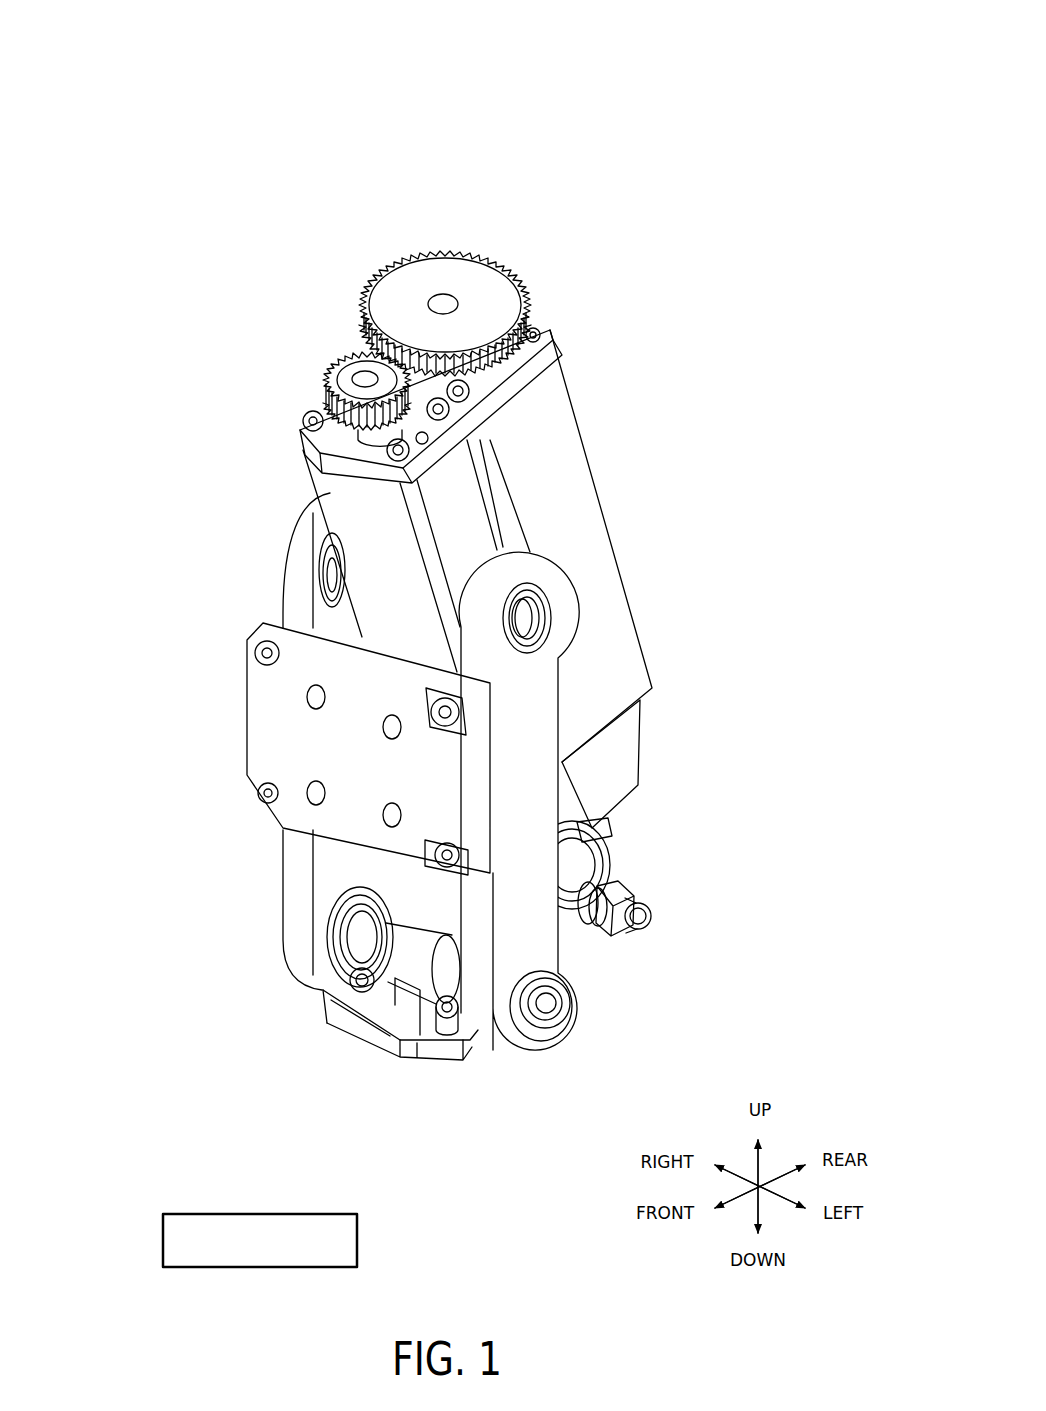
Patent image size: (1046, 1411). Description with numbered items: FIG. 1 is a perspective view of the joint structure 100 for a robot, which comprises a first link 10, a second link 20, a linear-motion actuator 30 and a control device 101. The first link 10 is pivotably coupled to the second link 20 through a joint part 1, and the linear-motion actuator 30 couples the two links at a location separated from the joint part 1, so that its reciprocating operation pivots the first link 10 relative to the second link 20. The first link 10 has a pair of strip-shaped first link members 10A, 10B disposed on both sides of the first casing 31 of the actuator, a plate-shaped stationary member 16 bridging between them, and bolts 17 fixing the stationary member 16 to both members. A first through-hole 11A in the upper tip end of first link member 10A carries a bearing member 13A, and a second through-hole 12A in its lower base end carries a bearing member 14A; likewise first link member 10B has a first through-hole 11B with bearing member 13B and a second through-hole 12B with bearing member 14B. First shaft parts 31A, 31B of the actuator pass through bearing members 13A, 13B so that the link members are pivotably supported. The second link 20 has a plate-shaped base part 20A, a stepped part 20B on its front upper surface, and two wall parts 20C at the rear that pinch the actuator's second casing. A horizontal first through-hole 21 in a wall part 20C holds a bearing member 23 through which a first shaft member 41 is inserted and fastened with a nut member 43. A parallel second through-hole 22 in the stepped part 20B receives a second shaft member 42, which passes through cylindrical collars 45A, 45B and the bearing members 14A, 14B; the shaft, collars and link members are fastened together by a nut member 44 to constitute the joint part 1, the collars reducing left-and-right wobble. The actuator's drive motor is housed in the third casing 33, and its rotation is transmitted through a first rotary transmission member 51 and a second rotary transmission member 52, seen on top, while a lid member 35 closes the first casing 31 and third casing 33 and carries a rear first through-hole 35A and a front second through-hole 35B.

The joint structure 100 is at (439, 29).
The joint part 1 is at (323, 992).
The first link 10 is at (292, 528).
The first link member 10A is at (300, 873).
The first link member 10B is at (528, 771).
The first through-hole 11A is at (300, 556).
The first through-hole 11B is at (538, 650).
The second through-hole 12A is at (325, 982).
The second through-hole 12B is at (573, 957).
The bearing member 13A is at (310, 598).
The bearing member 13B is at (550, 599).
The bearing member 14A is at (330, 908).
The bearing member 14B is at (553, 1038).
The stationary member 16 is at (295, 727).
The bolts 17 is at (256, 650).
The second link 20 is at (449, 1067).
The base part 20A is at (392, 1052).
The stepped part 20B is at (400, 1030).
The wall parts 20C is at (607, 837).
The first through-hole 21 is at (597, 860).
The second through-hole 22 is at (405, 1042).
The bearing member 23 is at (607, 865).
The linear-motion actuator 30 is at (310, 397).
The first casing 31 is at (468, 528).
The first shaft part 31A is at (305, 582).
The first shaft part 31B is at (545, 624).
The third casing 33 is at (557, 473).
The lid member 35 is at (548, 352).
The first through-hole 35A is at (545, 360).
The second through-hole 35B is at (540, 430).
The first shaft member 41 is at (653, 910).
The second shaft member 42 is at (573, 1008).
The nut member 43 is at (650, 897).
The nut member 44 is at (573, 987).
The cylindrical collar 45A is at (400, 945).
The cylindrical collar 45B is at (480, 1040).
The first rotary transmission member 51 is at (470, 292).
The second rotary transmission member 52 is at (348, 376).
The control device 101 is at (163, 1244).